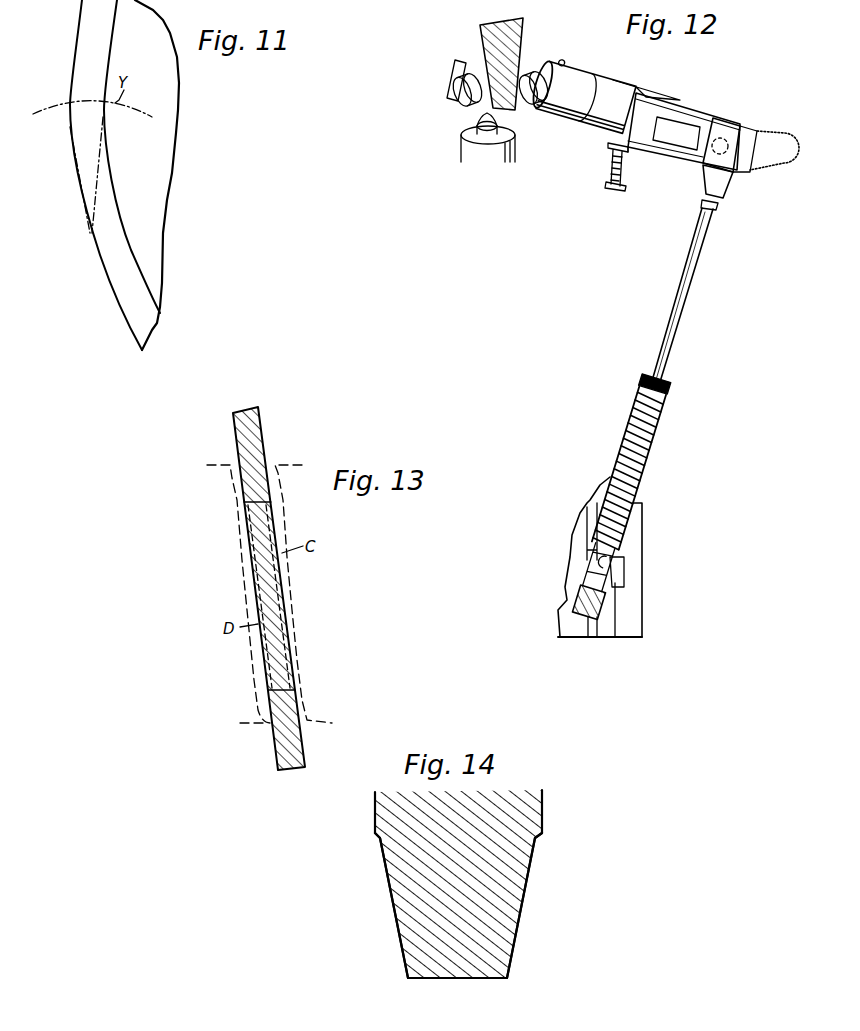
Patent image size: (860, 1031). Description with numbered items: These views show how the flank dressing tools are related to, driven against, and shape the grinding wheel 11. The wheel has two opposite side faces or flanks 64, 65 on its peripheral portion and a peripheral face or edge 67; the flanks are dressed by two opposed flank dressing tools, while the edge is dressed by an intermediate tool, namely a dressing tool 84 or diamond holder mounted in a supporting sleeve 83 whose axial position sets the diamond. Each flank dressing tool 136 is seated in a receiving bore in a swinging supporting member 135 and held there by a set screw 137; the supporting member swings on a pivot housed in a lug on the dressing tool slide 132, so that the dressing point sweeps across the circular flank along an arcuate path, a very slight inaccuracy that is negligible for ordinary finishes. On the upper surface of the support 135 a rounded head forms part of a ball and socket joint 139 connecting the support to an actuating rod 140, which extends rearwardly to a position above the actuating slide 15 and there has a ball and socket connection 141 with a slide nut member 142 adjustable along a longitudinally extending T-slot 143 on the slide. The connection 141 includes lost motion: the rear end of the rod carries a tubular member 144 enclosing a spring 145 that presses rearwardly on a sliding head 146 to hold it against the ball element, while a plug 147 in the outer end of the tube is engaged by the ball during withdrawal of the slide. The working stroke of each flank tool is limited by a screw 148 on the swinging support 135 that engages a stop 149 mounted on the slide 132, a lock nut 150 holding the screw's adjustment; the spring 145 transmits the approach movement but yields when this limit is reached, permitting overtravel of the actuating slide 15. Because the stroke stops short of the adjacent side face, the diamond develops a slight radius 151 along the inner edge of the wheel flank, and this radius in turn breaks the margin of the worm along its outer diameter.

In FIG. 11, the grinding wheel 11 is at (108, 289).
In FIG. 12, the grinding wheel 11 is at (481, 40).
In FIG. 13, the grinding wheel 11 is at (235, 434).
In FIG. 14, the grinding wheel 11 is at (543, 817).
In FIG. 12, the actuating slide 15 is at (570, 638).
In FIG. 14, the side face or flank 64 is at (390, 918).
In FIG. 14, the side face or flank 65 is at (527, 913).
In FIG. 14, the peripheral face or edge 67 is at (483, 980).
In FIG. 12, the supporting sleeve 83 is at (465, 149).
In FIG. 12, the dressing tool 84 is at (504, 126).
In FIG. 12, the dressing tool slide 132 is at (648, 80).
In FIG. 12, the supporting member 135 is at (447, 78).
In FIG. 11, the dressing tool 136 is at (70, 127).
In FIG. 12, the dressing tool 136 is at (457, 92).
In FIG. 12, the set screw 137 is at (562, 60).
In FIG. 12, the ball and socket joint 139 is at (750, 138).
In FIG. 12, the actuating rod 140 is at (678, 332).
In FIG. 12, the ball and socket connection 141 is at (576, 567).
In FIG. 12, the slide nut member 142 is at (624, 581).
In FIG. 12, the T-slot 143 is at (615, 638).
In FIG. 12, the tubular member 144 is at (627, 442).
In FIG. 12, the spring 145 is at (647, 478).
In FIG. 12, the sliding head 146 is at (620, 558).
In FIG. 12, the plug 147 is at (578, 610).
In FIG. 12, the screw 148 is at (607, 188).
In FIG. 12, the stop 149 is at (660, 86).
In FIG. 12, the lock nut 150 is at (612, 151).
In FIG. 14, the radius 151 is at (378, 838).